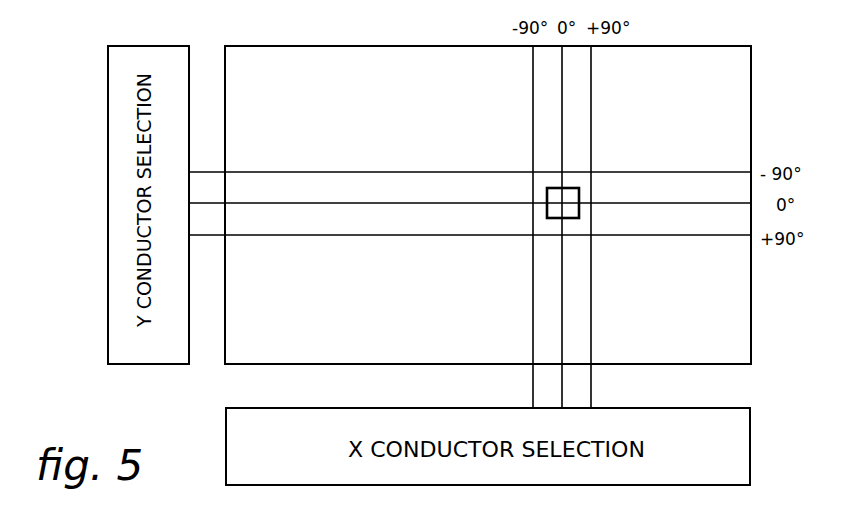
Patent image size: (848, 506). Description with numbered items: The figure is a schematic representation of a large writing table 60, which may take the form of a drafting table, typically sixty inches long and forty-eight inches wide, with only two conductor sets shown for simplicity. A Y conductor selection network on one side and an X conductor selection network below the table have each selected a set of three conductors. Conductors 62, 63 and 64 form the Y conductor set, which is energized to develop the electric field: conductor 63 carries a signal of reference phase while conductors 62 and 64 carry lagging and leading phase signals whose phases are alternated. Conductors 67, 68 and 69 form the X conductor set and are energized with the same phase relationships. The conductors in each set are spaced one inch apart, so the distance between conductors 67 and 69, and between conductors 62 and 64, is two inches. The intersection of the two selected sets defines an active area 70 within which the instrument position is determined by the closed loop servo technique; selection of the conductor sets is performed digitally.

The writing table 60 is at (466, 125).
The conductor 62 is at (281, 172).
The conductor 63 is at (318, 203).
The conductor 64 is at (354, 235).
The conductor 67 is at (534, 287).
The conductor 68 is at (562, 315).
The conductor 69 is at (591, 338).
The active area 70 is at (579, 188).